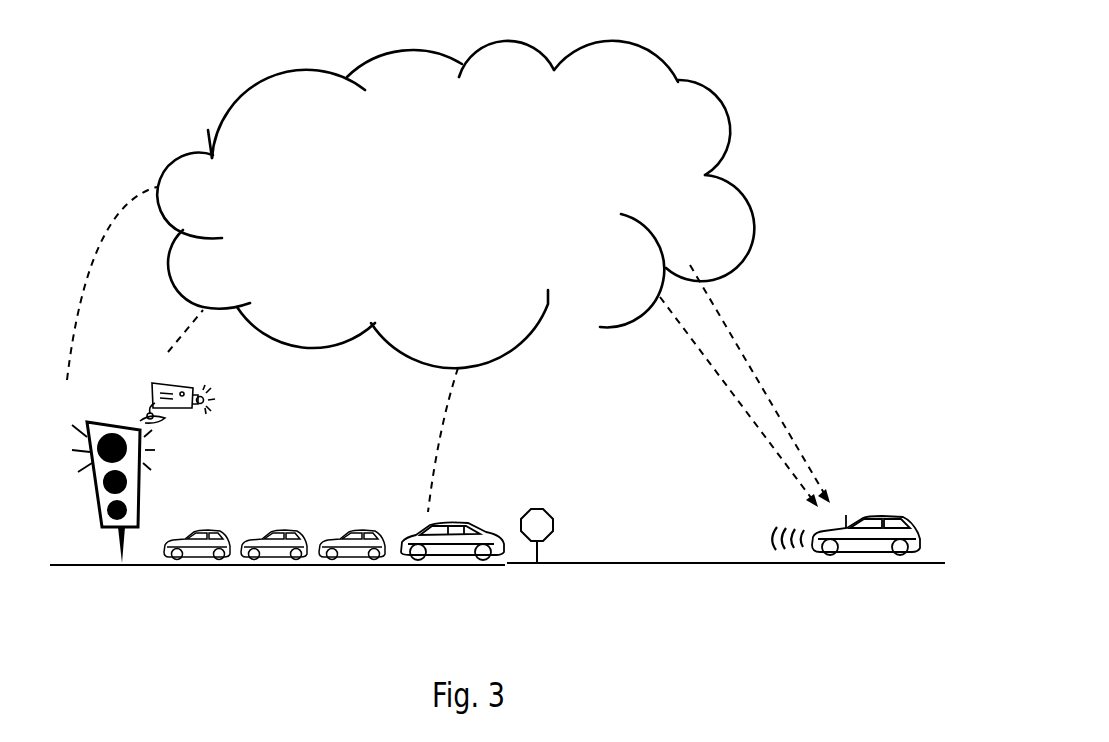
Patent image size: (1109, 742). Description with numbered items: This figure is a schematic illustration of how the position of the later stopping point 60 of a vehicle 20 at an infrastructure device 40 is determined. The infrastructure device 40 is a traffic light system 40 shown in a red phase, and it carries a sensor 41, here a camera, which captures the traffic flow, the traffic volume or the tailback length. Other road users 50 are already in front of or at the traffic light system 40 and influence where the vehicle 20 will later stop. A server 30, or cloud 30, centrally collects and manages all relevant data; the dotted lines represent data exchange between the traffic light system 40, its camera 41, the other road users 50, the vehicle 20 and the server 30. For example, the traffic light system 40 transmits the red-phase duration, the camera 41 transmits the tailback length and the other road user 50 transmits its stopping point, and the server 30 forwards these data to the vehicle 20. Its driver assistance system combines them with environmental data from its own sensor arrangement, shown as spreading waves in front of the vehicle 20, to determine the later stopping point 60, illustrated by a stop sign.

The vehicle 20 is at (883, 523).
The server 30 is at (685, 102).
The infrastructure device 40 is at (108, 513).
The sensor 41 is at (178, 407).
The other road users 50 is at (423, 553).
The later stopping point 60 is at (538, 550).